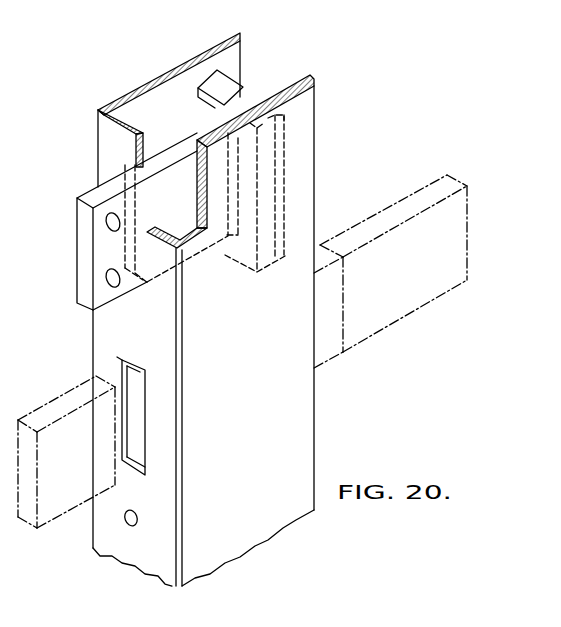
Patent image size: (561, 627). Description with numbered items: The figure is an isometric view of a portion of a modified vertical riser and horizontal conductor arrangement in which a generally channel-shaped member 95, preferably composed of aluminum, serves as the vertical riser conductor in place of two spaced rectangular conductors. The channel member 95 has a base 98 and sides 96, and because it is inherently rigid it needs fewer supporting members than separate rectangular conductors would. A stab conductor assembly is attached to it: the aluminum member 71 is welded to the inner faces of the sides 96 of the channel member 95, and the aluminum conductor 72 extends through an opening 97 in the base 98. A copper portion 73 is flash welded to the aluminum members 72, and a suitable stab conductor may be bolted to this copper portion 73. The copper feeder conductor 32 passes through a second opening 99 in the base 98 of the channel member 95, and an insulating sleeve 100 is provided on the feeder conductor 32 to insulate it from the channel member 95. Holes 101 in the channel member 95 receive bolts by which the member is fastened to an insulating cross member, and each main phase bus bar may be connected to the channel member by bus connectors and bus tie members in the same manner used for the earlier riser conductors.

The feeder conductor 32 is at (413, 297).
The member of the stab conductor assembly 71 is at (223, 97).
The conductor 72 is at (170, 145).
The copper portion 73 is at (77, 226).
The channel-shaped member 95 is at (254, 411).
The sides 96 is at (158, 79).
The opening 97 is at (130, 164).
The base 98 is at (107, 337).
The opening 99 is at (147, 388).
The insulating sleeve 100 is at (329, 353).
The holes 101 is at (127, 523).